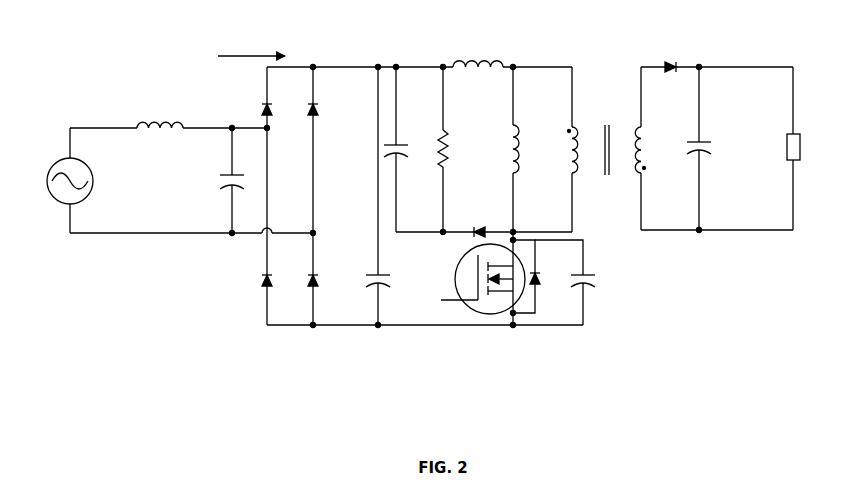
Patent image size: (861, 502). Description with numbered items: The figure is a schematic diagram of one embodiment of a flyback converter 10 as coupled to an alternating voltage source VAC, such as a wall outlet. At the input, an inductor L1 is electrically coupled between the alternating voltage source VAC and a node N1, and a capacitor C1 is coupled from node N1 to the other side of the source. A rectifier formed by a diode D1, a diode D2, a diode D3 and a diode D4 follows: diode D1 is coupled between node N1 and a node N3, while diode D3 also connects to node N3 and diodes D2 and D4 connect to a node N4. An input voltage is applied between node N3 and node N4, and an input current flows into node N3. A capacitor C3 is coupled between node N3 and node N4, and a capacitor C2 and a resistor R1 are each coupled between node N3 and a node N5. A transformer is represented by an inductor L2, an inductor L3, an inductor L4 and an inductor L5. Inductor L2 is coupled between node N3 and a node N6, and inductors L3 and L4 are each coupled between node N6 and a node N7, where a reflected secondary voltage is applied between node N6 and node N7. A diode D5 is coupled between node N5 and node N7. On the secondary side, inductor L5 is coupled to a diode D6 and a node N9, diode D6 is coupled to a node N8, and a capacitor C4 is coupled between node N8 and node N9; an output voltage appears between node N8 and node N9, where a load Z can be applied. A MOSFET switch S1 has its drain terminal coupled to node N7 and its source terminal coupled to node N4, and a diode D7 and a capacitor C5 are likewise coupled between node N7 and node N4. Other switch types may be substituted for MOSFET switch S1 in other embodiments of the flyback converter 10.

The flyback converter 10 is at (433, 381).
The node N1 is at (233, 127).
The node N3 is at (314, 66).
The node N4 is at (314, 326).
The node N5 is at (441, 231).
The node N6 is at (513, 66).
The node N7 is at (511, 217).
The node N8 is at (700, 66).
The node N9 is at (699, 231).
The alternating voltage source VAC is at (50, 180).
The inductor L1 is at (160, 143).
The capacitor C1 is at (219, 180).
The diode D1 is at (276, 112).
The diode D2 is at (275, 283).
The diode D3 is at (321, 112).
The diode D4 is at (322, 283).
The capacitor C2 is at (404, 149).
The capacitor C3 is at (386, 196).
The resistor R1 is at (454, 149).
The inductor L2 is at (478, 75).
The inductor L3 is at (505, 149).
The inductor L4 is at (581, 149).
The inductor L5 is at (631, 148).
The diode D5 is at (478, 221).
The diode D6 is at (668, 79).
The diode D7 is at (536, 276).
The capacitor C4 is at (689, 148).
The capacitor C5 is at (572, 282).
The MOSFET switch S1 is at (480, 278).
The load Z is at (803, 148).